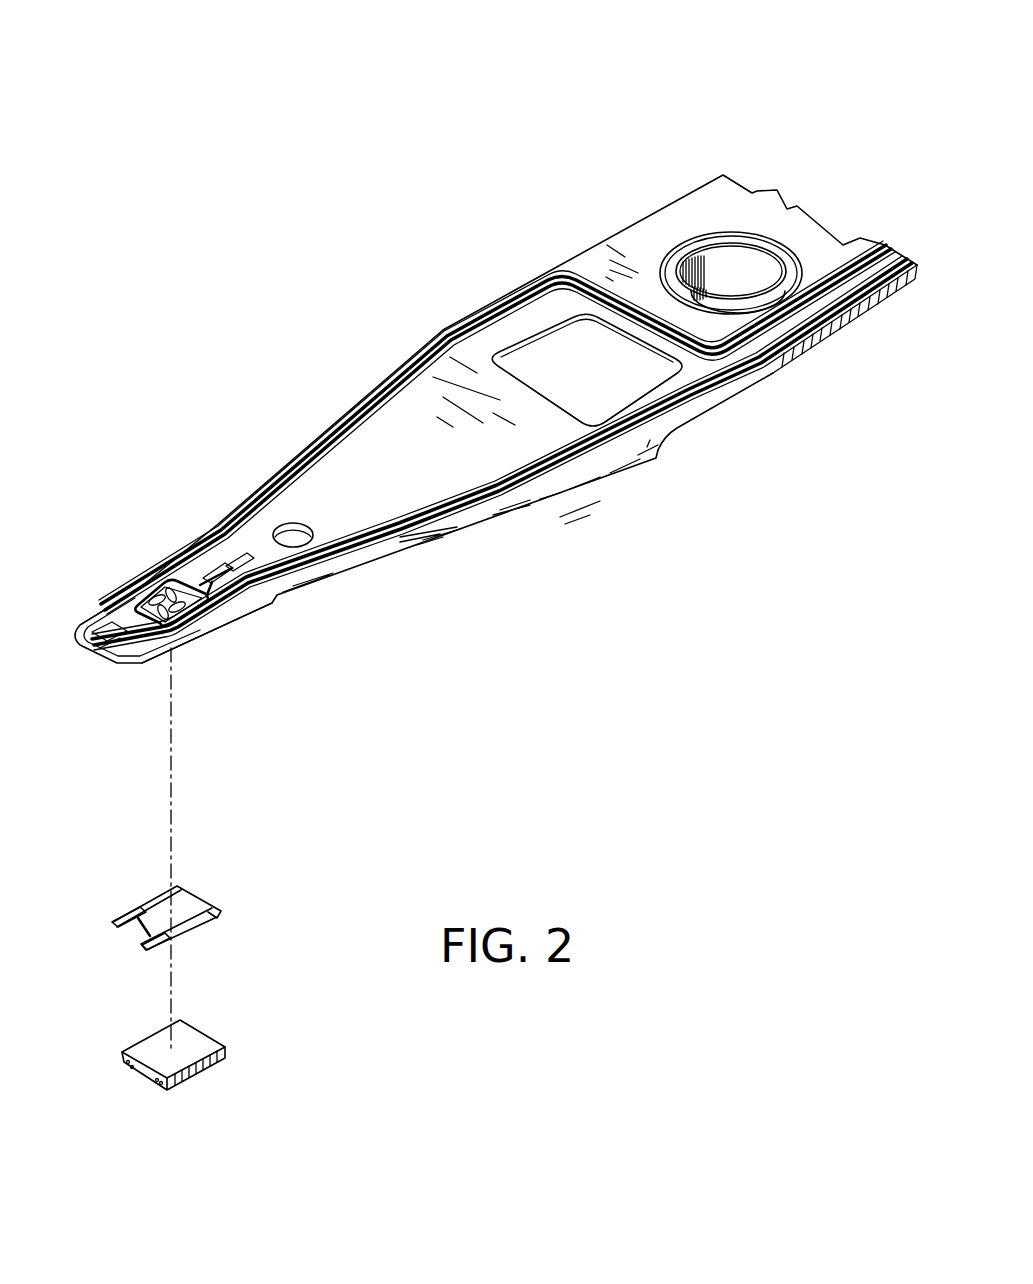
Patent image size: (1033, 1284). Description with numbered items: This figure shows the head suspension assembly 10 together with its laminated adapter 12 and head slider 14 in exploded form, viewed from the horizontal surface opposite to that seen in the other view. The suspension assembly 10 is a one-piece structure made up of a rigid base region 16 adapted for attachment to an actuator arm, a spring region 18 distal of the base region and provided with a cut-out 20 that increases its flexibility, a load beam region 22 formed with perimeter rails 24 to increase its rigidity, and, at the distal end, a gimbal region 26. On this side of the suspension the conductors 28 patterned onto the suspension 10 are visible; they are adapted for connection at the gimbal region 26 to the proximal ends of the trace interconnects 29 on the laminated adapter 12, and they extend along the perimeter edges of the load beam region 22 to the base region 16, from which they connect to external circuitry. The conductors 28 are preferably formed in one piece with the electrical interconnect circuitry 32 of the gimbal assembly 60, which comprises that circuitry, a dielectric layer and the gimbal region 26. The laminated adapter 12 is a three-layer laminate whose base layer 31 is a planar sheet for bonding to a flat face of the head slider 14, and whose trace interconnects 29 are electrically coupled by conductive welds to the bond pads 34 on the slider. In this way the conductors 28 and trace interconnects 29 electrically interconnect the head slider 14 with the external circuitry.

The suspension assembly 10 is at (558, 90).
The laminated adapter 12 is at (268, 863).
The head slider 14 is at (175, 1064).
The rigid base region 16 is at (650, 212).
The spring region 18 is at (673, 432).
The cut-out 20 is at (588, 396).
The load beam region 22 is at (463, 481).
The perimeter rails 24 is at (385, 547).
The gimbal region 26 is at (195, 638).
The conductors 28 is at (427, 513).
The trace interconnects 29 is at (122, 943).
The base layer 31 is at (124, 888).
The electrical interconnect circuitry 32 is at (205, 587).
The bond pads 34 is at (130, 1070).
The gimbal assembly 60 is at (130, 655).